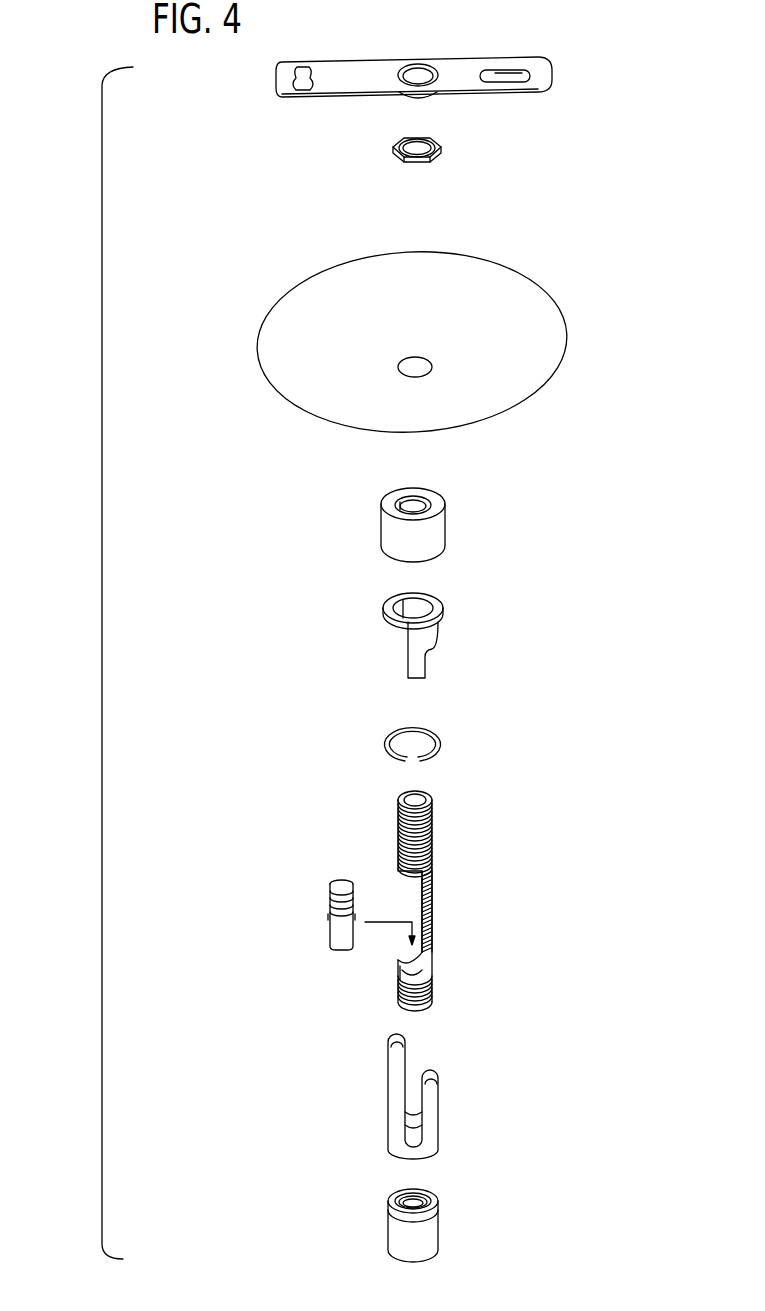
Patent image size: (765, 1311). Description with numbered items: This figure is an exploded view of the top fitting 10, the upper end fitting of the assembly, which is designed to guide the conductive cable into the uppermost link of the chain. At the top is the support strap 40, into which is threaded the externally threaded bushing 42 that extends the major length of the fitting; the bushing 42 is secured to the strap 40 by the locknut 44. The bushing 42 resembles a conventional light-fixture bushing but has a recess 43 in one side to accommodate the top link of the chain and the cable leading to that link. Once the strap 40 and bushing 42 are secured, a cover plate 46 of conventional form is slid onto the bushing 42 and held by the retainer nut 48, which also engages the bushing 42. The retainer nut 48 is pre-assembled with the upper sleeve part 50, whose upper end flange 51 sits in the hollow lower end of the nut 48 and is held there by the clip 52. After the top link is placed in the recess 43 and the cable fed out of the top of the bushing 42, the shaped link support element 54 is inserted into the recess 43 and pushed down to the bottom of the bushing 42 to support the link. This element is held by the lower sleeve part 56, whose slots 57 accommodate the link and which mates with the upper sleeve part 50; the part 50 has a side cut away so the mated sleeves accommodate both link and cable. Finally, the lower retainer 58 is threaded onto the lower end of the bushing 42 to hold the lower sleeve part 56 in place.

The top fitting 10 is at (102, 683).
The support strap 40 is at (475, 84).
The bushing 42 is at (433, 843).
The recess 43 is at (422, 893).
The locknut 44 is at (440, 162).
The cover plate 46 is at (520, 290).
The retainer nut 48 is at (443, 528).
The upper sleeve part 50 is at (434, 633).
The upper end flange 51 is at (435, 592).
The clip 52 is at (442, 735).
The link support element 54 is at (333, 935).
The lower sleeve part 56 is at (437, 1113).
The slots 57 is at (412, 1110).
The lower retainer 58 is at (437, 1227).